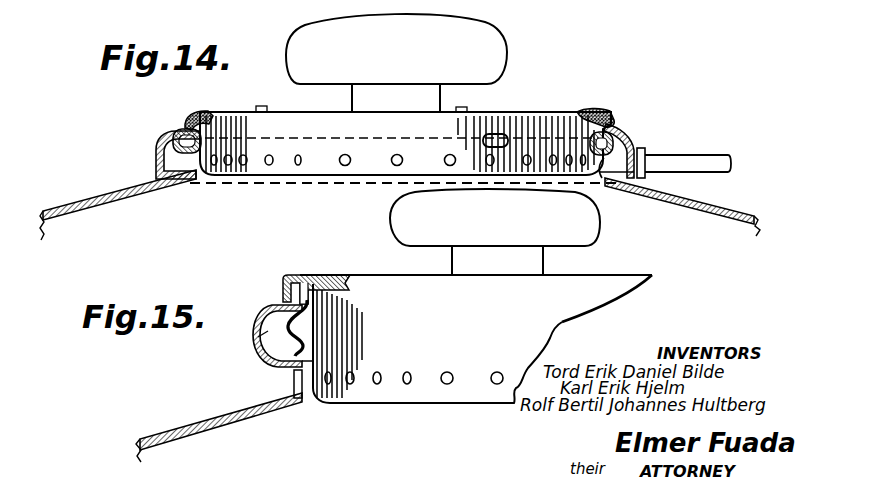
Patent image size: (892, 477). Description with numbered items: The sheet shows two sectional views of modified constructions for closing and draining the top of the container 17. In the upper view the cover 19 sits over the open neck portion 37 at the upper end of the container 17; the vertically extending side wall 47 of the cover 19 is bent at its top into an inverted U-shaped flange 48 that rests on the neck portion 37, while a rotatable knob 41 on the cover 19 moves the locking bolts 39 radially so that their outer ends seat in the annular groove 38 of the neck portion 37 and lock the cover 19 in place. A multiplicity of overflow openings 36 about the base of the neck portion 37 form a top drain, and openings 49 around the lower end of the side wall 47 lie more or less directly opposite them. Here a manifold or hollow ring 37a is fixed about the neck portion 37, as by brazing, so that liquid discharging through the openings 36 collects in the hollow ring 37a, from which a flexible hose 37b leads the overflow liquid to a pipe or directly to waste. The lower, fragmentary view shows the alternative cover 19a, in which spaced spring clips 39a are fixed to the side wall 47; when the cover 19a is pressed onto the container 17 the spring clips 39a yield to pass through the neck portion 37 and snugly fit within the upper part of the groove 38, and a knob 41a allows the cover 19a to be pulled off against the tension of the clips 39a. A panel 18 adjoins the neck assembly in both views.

In FIG. 14, the container 17 is at (66, 210).
In FIG. 14, the sheet metal panel 18 is at (736, 213).
In FIG. 15, the sheet metal panel 18 is at (208, 420).
In FIG. 14, the cover 19 is at (549, 109).
In FIG. 15, the cover 19a is at (379, 262).
In FIG. 14, the overflow openings 36 is at (613, 180).
In FIG. 15, the overflow openings 36 is at (293, 382).
In FIG. 14, the neck portion 37 is at (626, 129).
In FIG. 15, the neck portion 37 is at (273, 307).
In FIG. 14, the hollow ring 37a is at (154, 153).
In FIG. 14, the flexible hose 37b is at (724, 166).
In FIG. 15, the groove 38 is at (259, 339).
In FIG. 14, the locking bolts 39 is at (495, 133).
In FIG. 15, the spring clips 39a is at (299, 327).
In FIG. 14, the rotatable knob 41 is at (494, 50).
In FIG. 15, the knob 41a is at (396, 214).
In FIG. 15, the side wall 47 is at (318, 333).
In FIG. 14, the inverted U-shaped flange 48 is at (190, 124).
In FIG. 14, the openings 49 is at (397, 155).
In FIG. 15, the openings 49 is at (494, 371).